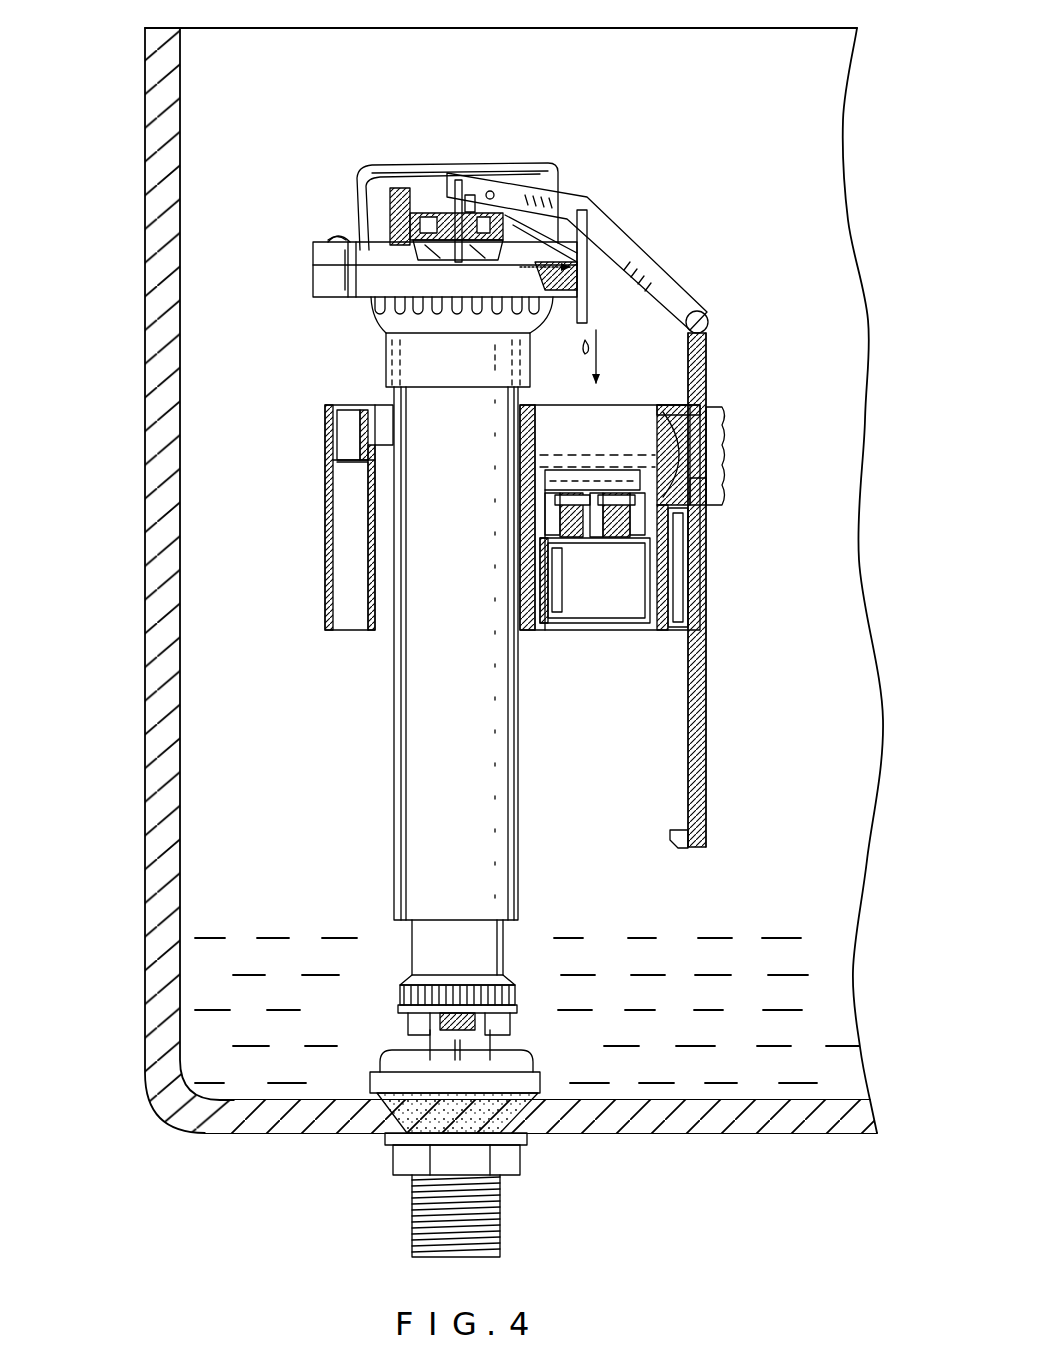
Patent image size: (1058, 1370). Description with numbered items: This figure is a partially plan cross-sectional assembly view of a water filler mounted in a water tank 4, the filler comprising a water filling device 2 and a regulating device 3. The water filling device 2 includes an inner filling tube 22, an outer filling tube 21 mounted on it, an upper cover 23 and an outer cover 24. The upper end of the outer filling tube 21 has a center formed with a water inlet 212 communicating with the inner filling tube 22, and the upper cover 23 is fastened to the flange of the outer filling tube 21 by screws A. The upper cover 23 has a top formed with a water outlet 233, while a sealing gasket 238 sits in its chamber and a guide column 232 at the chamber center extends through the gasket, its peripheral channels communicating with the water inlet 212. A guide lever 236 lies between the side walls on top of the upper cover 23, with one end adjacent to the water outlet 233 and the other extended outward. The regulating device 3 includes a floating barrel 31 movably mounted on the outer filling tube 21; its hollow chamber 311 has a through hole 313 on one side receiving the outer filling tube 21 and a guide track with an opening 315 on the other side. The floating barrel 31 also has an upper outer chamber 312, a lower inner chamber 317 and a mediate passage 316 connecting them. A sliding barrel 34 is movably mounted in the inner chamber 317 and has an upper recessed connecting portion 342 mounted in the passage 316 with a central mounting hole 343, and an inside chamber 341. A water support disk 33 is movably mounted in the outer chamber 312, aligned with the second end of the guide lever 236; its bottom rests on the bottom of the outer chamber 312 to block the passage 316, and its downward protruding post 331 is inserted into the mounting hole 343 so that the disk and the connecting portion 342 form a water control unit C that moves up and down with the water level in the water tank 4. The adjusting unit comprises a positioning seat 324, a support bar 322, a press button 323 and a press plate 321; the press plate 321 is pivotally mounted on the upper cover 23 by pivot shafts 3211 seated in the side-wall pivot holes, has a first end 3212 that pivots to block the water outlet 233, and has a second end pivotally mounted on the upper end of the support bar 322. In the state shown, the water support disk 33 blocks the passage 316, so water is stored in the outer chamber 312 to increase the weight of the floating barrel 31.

The water filling device 2 is at (272, 230).
The regulating device 3 is at (715, 290).
The water tank 4 is at (148, 236).
The outer filling tube 21 is at (400, 681).
The inner filling tube 22 is at (420, 942).
The upper cover 23 is at (383, 205).
The outer cover 24 is at (500, 165).
The floating barrel 31 is at (325, 460).
The water support disk 33 is at (620, 467).
The sliding barrel 34 is at (647, 594).
The water inlet 212 is at (372, 272).
The guide column 232 is at (432, 212).
The water outlet 233 is at (470, 215).
The guide lever 236 is at (588, 292).
The sealing gasket 238 is at (440, 247).
The hollow chamber 311 is at (345, 564).
The outer chamber 312 is at (637, 425).
The through hole 313 is at (383, 412).
The opening 315 is at (672, 440).
The passage 316 is at (650, 580).
The inner chamber 317 is at (553, 622).
The press plate 321 is at (585, 207).
The support bar 322 is at (704, 373).
The press button 323 is at (730, 480).
The positioning seat 324 is at (710, 457).
The protruding post 331 is at (597, 512).
The chamber 341 is at (580, 625).
The connecting portion 342 is at (628, 622).
The mounting hole 343 is at (617, 622).
The pivot shaft 3211 is at (496, 193).
The first end 3212 is at (459, 176).
The screws A is at (325, 236).
The water control unit C is at (693, 562).